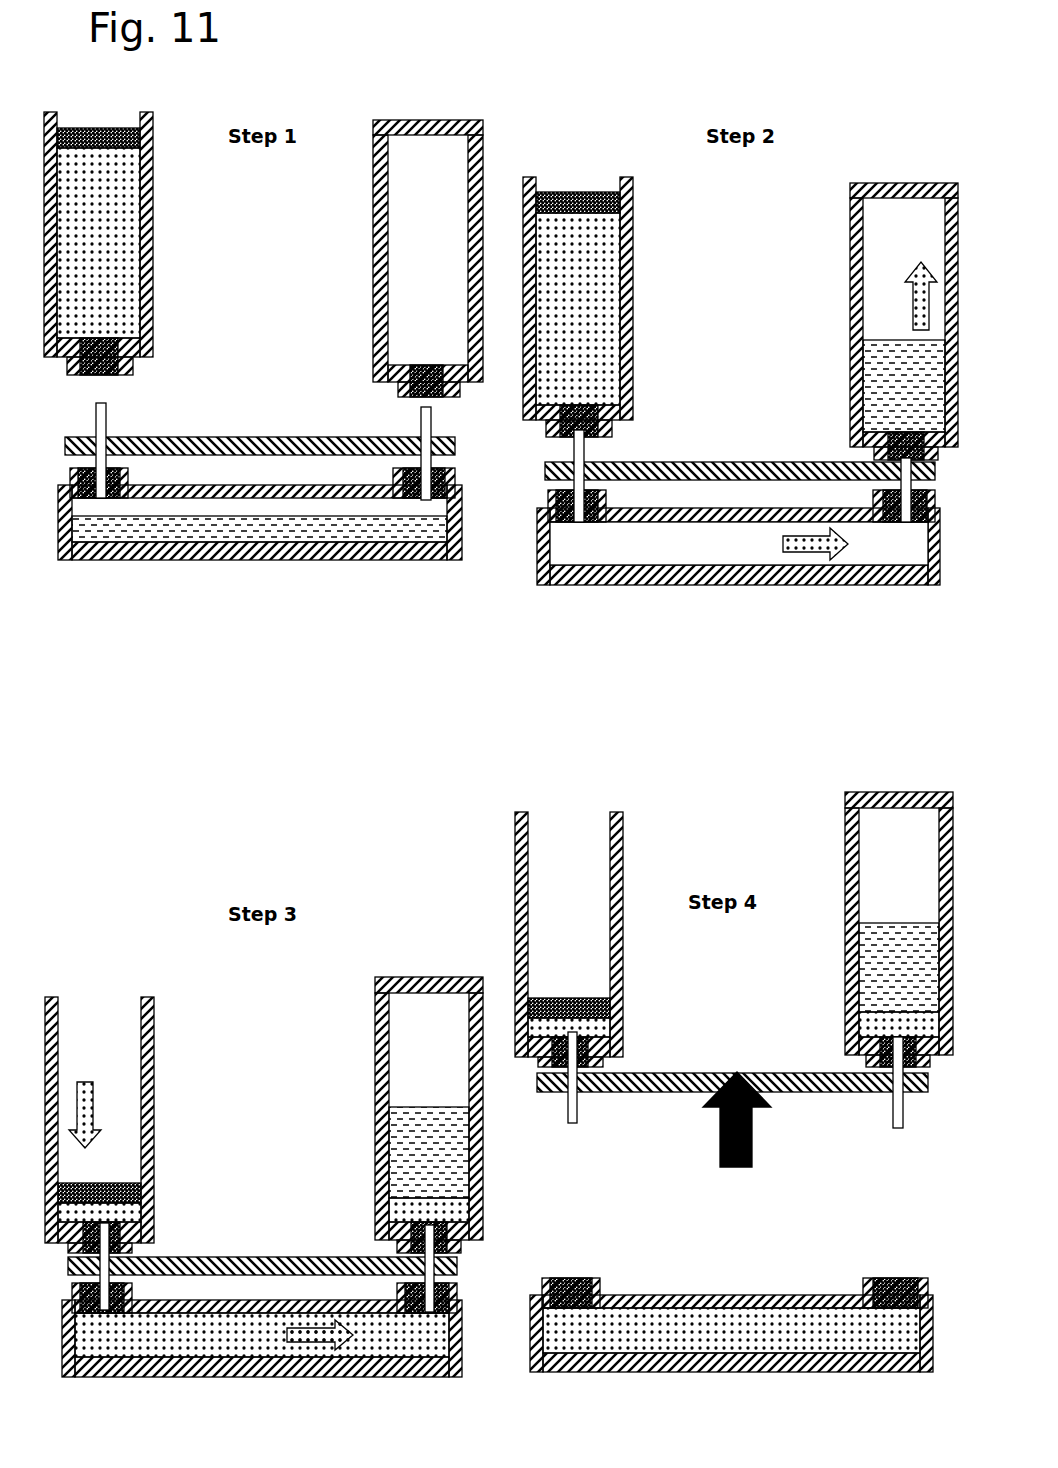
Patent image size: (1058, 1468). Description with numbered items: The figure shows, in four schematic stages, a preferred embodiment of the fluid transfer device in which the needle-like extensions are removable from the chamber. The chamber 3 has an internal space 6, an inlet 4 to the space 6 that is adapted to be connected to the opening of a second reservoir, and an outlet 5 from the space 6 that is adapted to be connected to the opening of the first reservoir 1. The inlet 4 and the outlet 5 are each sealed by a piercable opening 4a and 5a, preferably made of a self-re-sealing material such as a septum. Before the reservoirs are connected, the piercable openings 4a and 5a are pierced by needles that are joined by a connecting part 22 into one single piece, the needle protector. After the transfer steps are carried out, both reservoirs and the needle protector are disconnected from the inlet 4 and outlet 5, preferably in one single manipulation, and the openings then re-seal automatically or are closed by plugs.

The first reservoir 1 is at (421, 277).
The connecting part 22 is at (352, 441).
The chamber 3 is at (377, 559).
The inlet 4 is at (135, 470).
The piercable opening 4a is at (120, 461).
The outlet 5 is at (460, 466).
The piercable opening 5a is at (415, 458).
The internal space 6 is at (712, 542).